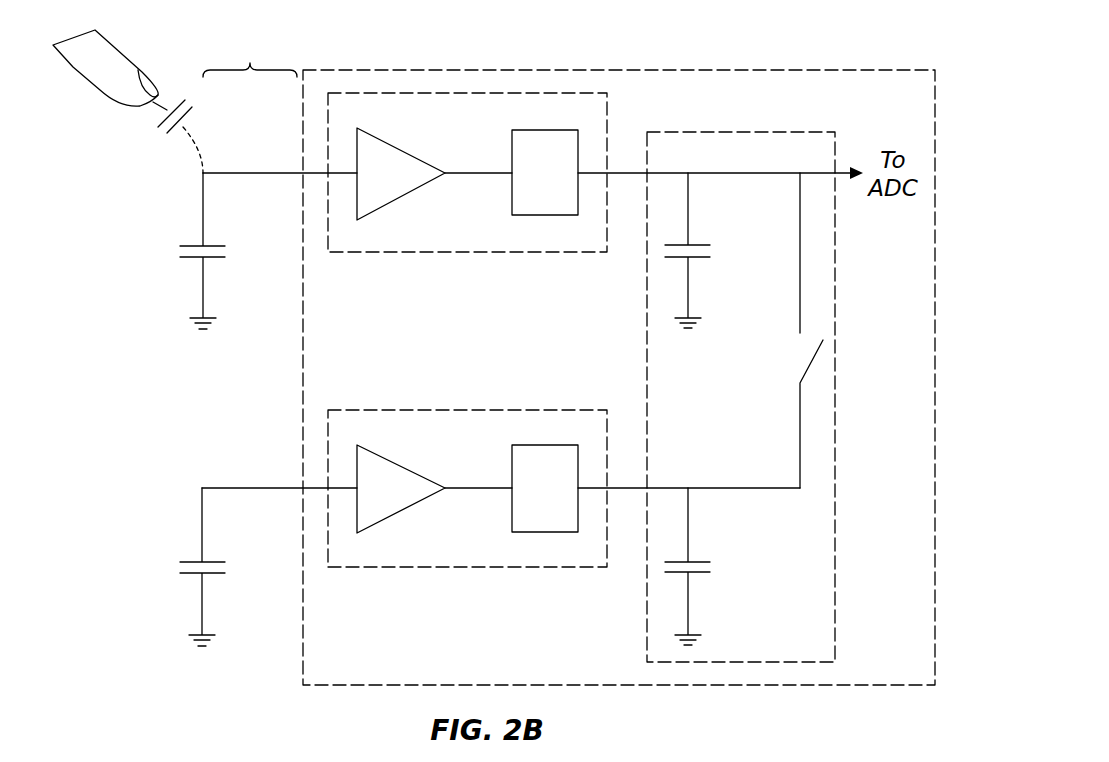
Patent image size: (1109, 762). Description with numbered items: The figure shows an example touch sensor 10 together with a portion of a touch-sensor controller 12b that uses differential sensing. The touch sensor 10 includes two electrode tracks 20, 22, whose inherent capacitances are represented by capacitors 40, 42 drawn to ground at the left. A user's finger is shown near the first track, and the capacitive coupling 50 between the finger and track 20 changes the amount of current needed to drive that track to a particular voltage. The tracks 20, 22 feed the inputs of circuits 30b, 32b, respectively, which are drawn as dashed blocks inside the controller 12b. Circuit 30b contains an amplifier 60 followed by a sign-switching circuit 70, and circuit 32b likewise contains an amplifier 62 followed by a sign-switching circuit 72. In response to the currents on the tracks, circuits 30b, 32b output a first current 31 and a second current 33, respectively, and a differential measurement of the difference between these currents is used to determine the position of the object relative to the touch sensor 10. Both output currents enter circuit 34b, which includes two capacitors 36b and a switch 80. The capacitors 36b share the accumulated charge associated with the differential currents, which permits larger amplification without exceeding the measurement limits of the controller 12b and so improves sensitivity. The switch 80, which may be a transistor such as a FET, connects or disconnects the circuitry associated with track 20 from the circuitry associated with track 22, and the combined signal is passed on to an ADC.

The touch sensor 10 is at (250, 55).
The touch-sensor controller 12b is at (436, 66).
The track 20 is at (233, 173).
The track 22 is at (257, 488).
The circuit 30b is at (610, 118).
The first current 31 is at (615, 173).
The circuit 32b is at (540, 408).
The second current 33 is at (615, 488).
The circuit 34b is at (842, 560).
The capacitors 36b is at (670, 267).
The capacitor 40 is at (184, 269).
The capacitor 42 is at (184, 589).
The capacitive coupling 50 is at (186, 85).
The amplifier 60 is at (400, 195).
The amplifier 62 is at (400, 510).
The sign-switching circuit 70 is at (545, 130).
The sign-switching circuit 72 is at (545, 445).
The switch 80 is at (820, 372).